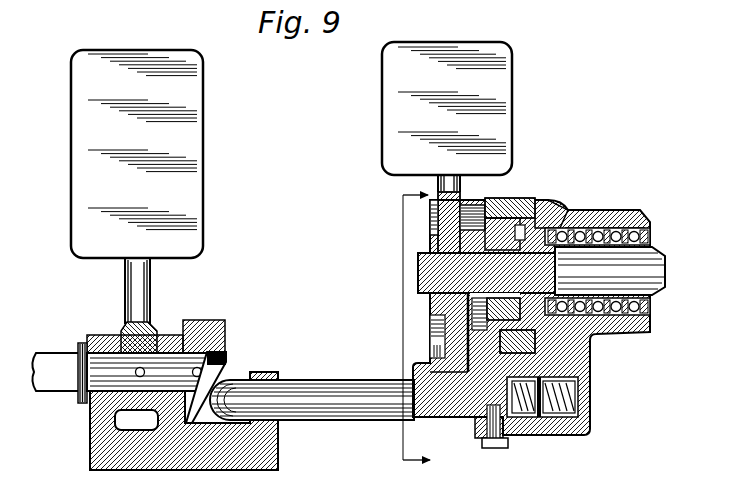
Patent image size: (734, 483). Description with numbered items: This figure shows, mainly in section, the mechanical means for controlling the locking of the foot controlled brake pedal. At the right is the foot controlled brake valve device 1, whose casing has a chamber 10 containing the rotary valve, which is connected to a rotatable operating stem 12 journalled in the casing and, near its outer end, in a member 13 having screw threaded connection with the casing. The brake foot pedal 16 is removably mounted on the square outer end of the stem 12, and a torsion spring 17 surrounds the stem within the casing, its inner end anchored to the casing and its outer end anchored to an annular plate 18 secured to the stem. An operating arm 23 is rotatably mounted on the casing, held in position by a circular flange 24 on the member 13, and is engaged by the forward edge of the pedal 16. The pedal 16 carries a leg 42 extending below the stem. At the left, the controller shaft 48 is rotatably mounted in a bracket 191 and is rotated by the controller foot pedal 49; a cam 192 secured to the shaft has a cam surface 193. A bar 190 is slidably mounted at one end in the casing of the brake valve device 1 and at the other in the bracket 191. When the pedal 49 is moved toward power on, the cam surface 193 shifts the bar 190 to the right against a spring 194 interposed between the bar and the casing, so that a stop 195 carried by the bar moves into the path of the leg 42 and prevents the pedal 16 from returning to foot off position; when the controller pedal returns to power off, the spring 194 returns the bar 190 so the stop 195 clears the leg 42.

The foot controlled brake valve device 1 is at (623, 222).
The chamber 10 is at (401, 330).
The rotatable operating stem 12 is at (552, 225).
The member 13 is at (510, 232).
The foot pedal 16 is at (447, 147).
The torsion spring 17 is at (640, 222).
The annular plate 18 is at (560, 325).
The operating arm 23 is at (430, 215).
The circular flange 24 is at (500, 222).
The leg 42 is at (460, 362).
The controller shaft 48 is at (53, 362).
The foot pedal 49 is at (137, 201).
The bar 190 is at (303, 390).
The bracket 191 is at (100, 447).
The cam 192 is at (208, 320).
The cam surface 193 is at (217, 373).
The spring 194 is at (575, 387).
The stop 195 is at (420, 360).